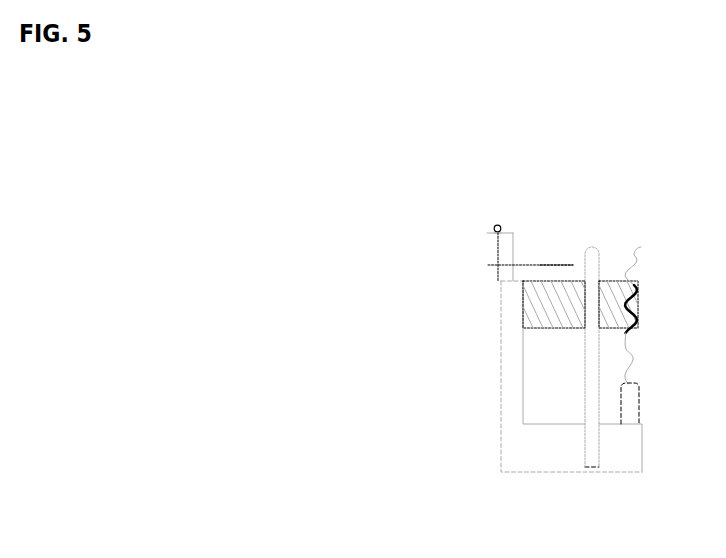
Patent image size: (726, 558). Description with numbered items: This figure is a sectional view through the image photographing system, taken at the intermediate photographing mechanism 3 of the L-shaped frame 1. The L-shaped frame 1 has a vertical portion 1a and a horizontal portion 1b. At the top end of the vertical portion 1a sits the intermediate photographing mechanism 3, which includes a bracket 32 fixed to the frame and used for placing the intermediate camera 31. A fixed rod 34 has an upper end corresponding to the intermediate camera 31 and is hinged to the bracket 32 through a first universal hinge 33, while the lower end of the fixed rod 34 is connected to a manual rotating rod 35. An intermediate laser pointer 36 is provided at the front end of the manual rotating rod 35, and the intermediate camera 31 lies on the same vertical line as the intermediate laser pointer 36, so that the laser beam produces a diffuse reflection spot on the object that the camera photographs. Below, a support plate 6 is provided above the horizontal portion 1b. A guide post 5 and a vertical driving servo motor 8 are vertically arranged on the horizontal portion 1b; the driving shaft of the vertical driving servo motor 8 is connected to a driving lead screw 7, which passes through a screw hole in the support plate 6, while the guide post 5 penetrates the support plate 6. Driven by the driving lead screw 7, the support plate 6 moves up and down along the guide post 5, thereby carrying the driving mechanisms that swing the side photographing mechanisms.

The L-shaped frame 1 is at (552, 376).
The vertical portion 1a is at (544, 352).
The horizontal portion 1b is at (570, 453).
The intermediate photographing mechanism 3 is at (508, 190).
The intermediate camera 31 is at (481, 208).
The bracket 32 is at (523, 242).
The first universal hinge 33 is at (481, 246).
The fixed rod 34 is at (517, 271).
The manual rotating rod 35 is at (556, 234).
The intermediate laser pointer 36 is at (479, 270).
The guide post 5 is at (596, 335).
The support plate 6 is at (580, 265).
The driving lead screw 7 is at (641, 305).
The vertical driving servo motor 8 is at (642, 381).